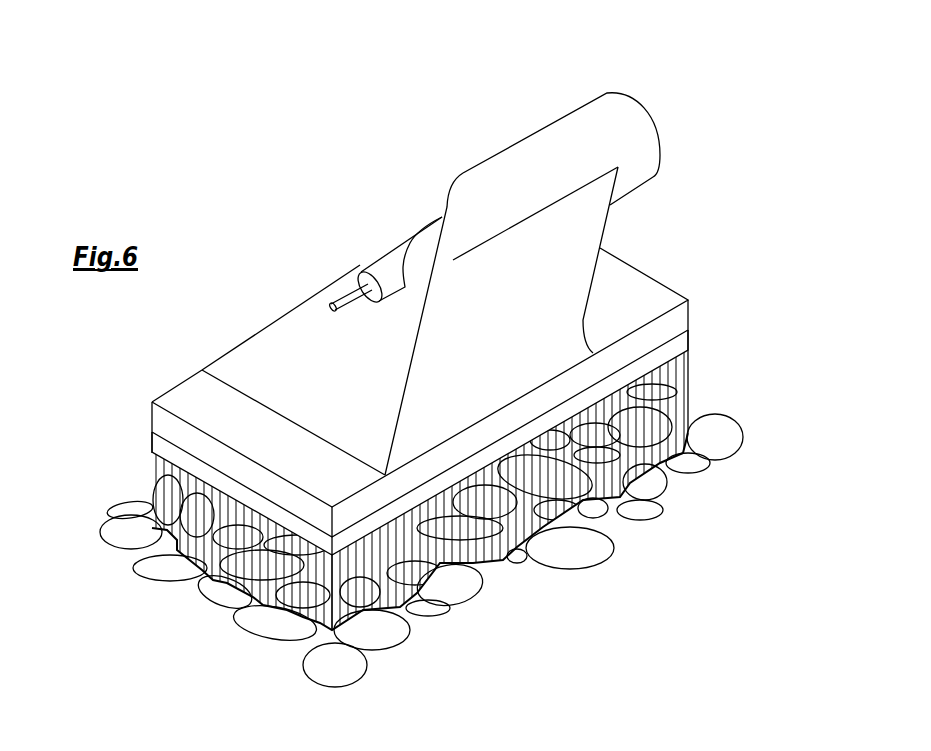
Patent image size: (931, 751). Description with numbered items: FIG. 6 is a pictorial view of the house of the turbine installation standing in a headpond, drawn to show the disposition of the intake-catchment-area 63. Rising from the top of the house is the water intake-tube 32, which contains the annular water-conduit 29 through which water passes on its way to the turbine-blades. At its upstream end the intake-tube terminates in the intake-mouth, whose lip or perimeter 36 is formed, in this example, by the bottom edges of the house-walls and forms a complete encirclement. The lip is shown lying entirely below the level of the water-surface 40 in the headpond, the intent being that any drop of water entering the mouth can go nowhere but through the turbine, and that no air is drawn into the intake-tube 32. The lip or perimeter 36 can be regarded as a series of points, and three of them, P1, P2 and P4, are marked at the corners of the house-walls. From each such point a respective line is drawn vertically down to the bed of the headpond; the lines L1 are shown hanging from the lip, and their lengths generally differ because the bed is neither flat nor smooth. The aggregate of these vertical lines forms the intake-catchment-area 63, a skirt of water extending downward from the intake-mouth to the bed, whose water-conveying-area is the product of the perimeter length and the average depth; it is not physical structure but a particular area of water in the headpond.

The annular water-conduit 29 is at (547, 157).
The water intake-tube 32 is at (283, 368).
The water-surface 40 is at (630, 357).
The lip or perimeter of the intake-mouth 36 is at (580, 500).
The intake-catchment-area 63 is at (463, 535).
The point on the lip of the intake-mouth P1 is at (332, 555).
The point on the lip of the intake-mouth P2 is at (688, 353).
The point on the lip of the intake-mouth P4 is at (153, 453).
The line from point P1 to the headpond bed L1 is at (690, 387).